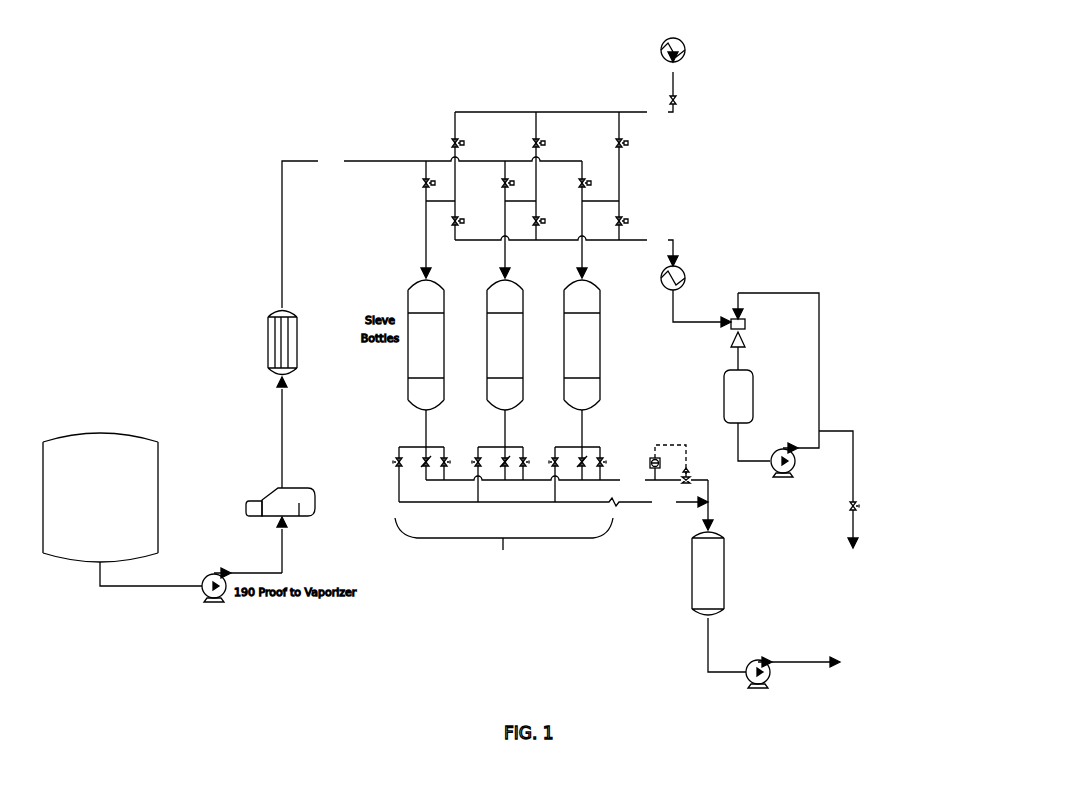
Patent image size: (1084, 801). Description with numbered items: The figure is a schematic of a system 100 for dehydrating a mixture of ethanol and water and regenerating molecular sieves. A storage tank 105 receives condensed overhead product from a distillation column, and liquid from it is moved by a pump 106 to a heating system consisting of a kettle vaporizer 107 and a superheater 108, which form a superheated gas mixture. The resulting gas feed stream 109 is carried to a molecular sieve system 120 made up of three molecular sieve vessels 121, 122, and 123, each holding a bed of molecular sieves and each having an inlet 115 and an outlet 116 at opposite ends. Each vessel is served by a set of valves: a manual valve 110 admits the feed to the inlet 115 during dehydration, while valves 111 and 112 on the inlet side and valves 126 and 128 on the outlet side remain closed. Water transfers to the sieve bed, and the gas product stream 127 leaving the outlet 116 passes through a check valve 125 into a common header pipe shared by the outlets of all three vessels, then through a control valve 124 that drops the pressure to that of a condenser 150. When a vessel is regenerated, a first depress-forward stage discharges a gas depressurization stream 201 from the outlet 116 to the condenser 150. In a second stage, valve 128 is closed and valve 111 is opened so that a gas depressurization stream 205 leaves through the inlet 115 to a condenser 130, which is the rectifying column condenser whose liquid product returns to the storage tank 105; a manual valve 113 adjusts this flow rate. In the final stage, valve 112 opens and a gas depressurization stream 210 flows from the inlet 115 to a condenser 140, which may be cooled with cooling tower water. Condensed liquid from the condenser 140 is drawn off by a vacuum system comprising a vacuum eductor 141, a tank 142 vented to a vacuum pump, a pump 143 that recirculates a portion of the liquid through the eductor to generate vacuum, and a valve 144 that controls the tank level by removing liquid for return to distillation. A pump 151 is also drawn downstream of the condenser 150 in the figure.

The system 100 is at (128, 74).
The storage tank 105 is at (100, 497).
The pump 106 is at (242, 591).
The kettle vaporizer 107 is at (251, 519).
The superheater 108 is at (243, 400).
The gas feed stream 109 is at (432, 231).
The valve 110 is at (497, 184).
The valve 111 is at (530, 144).
The valve 112 is at (530, 222).
The valve 113 is at (682, 78).
The inlet 115 is at (515, 219).
The outlet 116 is at (499, 428).
The molecular sieve system 120 is at (504, 546).
The molecular sieve vessel 121 is at (426, 345).
The molecular sieve vessel 122 is at (505, 345).
The molecular sieve vessel 123 is at (582, 345).
The control valve 124 is at (671, 461).
The check valve 125 is at (497, 463).
The valve 126 is at (531, 463).
The gas product stream 127 is at (567, 481).
The valve 128 is at (466, 474).
The condenser 130 is at (710, 41).
The condenser 140 is at (724, 284).
The vacuum eductor 141 is at (752, 331).
The tank 142 is at (720, 411).
The pump 143 is at (778, 393).
The valve 144 is at (887, 489).
The condenser 150 is at (646, 548).
The pump 151 is at (796, 661).
The gas depressurization stream 201 is at (553, 508).
The gas depressurization stream 205 is at (564, 112).
The gas depressurization stream 210 is at (566, 250).